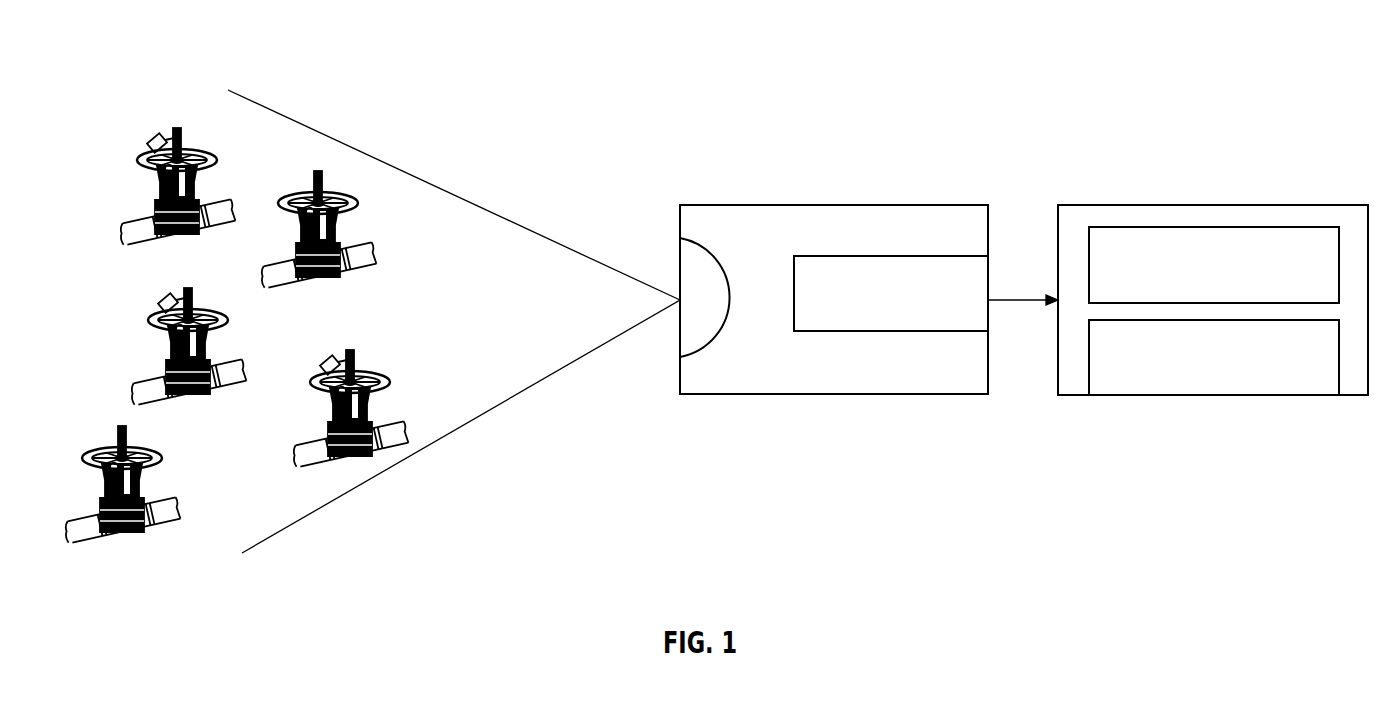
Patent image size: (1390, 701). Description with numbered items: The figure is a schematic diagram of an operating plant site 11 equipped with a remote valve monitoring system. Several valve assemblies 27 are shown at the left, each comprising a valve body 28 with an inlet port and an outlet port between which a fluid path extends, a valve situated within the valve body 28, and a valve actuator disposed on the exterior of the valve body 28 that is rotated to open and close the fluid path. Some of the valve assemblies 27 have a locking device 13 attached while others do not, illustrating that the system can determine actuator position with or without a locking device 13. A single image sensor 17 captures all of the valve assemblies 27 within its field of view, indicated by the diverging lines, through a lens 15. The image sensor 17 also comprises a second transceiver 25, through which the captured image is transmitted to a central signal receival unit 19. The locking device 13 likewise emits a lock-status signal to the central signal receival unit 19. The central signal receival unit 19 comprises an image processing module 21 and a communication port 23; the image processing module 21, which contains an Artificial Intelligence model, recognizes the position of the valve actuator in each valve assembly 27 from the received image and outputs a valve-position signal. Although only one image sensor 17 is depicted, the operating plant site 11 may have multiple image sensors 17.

The operating plant site 11 is at (509, 46).
The locking device 13 is at (158, 138).
The lens 15 is at (705, 247).
The image sensor 17 is at (938, 205).
The central signal receival unit 19 is at (1110, 205).
The image processing module 21 is at (1223, 282).
The communication port 23 is at (1223, 367).
The second transceiver 25 is at (905, 308).
The valve assembly 27 is at (134, 562).
The valve body 28 is at (150, 377).